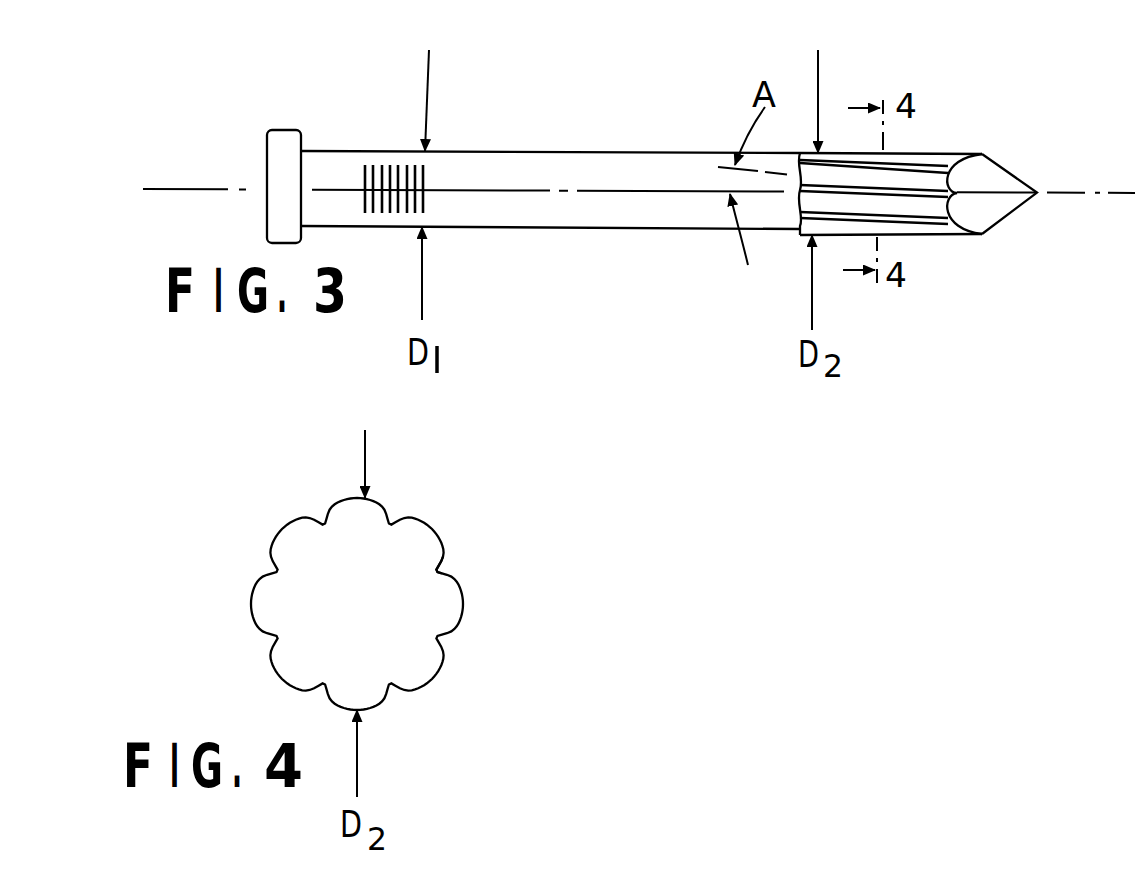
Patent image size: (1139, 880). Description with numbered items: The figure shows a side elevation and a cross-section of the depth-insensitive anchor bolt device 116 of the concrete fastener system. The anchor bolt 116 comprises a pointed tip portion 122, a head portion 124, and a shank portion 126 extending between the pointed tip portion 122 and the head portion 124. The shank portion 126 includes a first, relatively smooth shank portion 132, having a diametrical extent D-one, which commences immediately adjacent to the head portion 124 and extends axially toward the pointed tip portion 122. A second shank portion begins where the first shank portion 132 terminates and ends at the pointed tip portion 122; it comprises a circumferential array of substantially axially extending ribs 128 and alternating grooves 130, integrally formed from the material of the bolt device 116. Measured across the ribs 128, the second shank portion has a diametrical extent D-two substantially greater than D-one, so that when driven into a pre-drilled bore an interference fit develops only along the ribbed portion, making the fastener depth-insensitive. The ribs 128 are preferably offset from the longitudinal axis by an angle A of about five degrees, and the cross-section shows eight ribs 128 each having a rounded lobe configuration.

In FIG. 3, the depth-insensitive anchor bolt device 116 is at (630, 178).
In FIG. 3, the pointed tip portion 122 is at (1005, 173).
In FIG. 3, the head portion 124 is at (277, 148).
In FIG. 3, the shank portion 126 is at (573, 229).
In FIG. 3, the ribs 128 is at (922, 192).
In FIG. 4, the ribs 128 is at (432, 675).
In FIG. 3, the grooves 130 is at (915, 208).
In FIG. 4, the grooves 130 is at (433, 565).
In FIG. 3, the first shank portion 132 is at (517, 163).